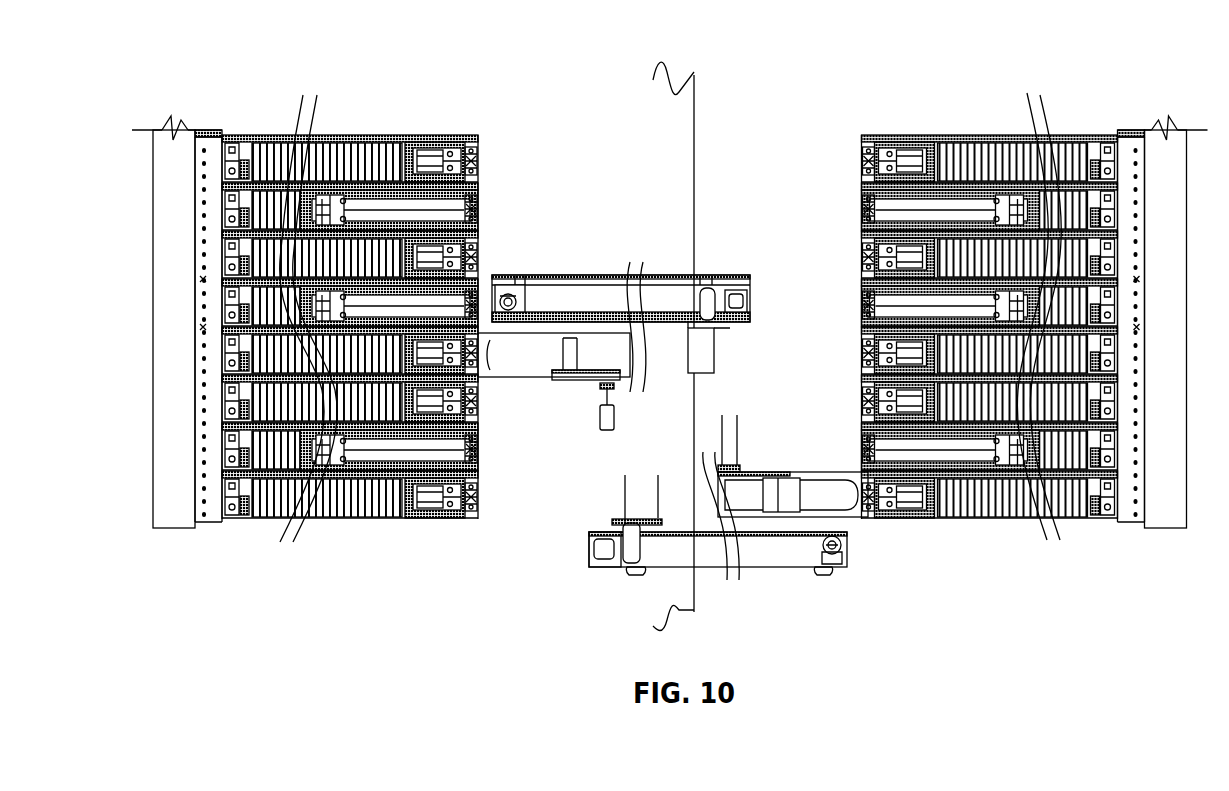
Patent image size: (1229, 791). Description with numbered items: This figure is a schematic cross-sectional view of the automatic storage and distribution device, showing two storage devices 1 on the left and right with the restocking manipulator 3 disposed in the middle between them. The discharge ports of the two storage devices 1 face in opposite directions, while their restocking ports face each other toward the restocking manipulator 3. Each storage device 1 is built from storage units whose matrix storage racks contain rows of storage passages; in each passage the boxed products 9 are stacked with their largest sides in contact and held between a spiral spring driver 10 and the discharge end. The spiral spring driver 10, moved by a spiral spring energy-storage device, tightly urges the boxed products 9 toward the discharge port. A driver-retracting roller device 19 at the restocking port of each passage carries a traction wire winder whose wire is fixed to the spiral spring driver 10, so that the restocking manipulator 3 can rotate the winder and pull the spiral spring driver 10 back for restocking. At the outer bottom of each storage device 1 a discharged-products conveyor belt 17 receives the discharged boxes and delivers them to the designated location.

The storage device 1 is at (403, 137).
The restocking manipulator 3 is at (543, 335).
The boxed products 9 is at (328, 150).
The spiral spring driver 10 is at (430, 140).
The discharged-products conveyor belt 17 is at (166, 133).
The driver-retracting roller device 19 is at (478, 152).